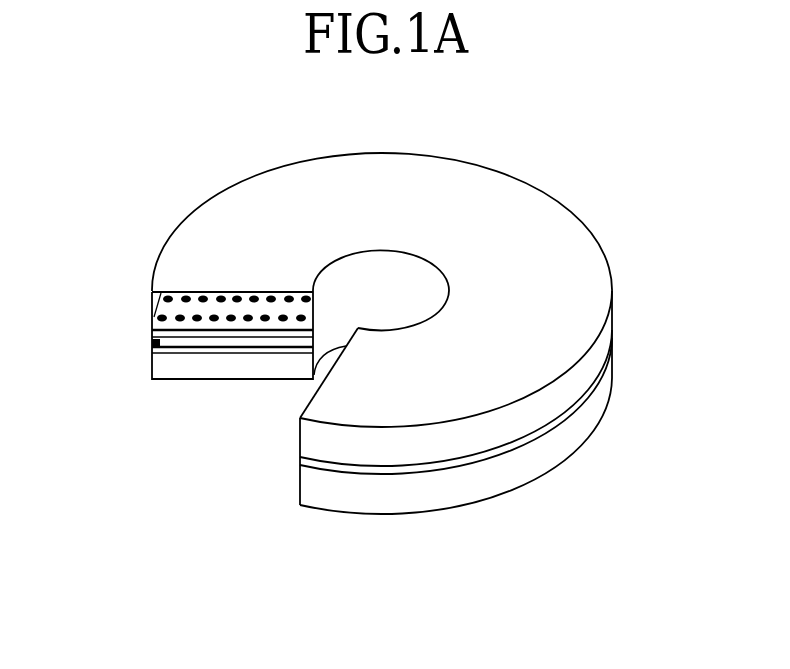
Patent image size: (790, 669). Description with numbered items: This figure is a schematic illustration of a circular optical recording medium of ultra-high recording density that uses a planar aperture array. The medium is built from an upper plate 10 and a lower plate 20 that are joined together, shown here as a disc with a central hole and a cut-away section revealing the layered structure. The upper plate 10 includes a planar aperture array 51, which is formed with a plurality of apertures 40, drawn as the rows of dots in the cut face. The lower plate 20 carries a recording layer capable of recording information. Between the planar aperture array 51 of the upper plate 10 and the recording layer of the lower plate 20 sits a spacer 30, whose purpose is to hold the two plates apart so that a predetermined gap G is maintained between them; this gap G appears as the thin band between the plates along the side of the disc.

The upper plate 10 is at (576, 238).
The lower plate 20 is at (580, 425).
The spacer 30 is at (157, 341).
The apertures 40 is at (160, 318).
The planar aperture array 51 is at (262, 320).
The gap G is at (413, 467).